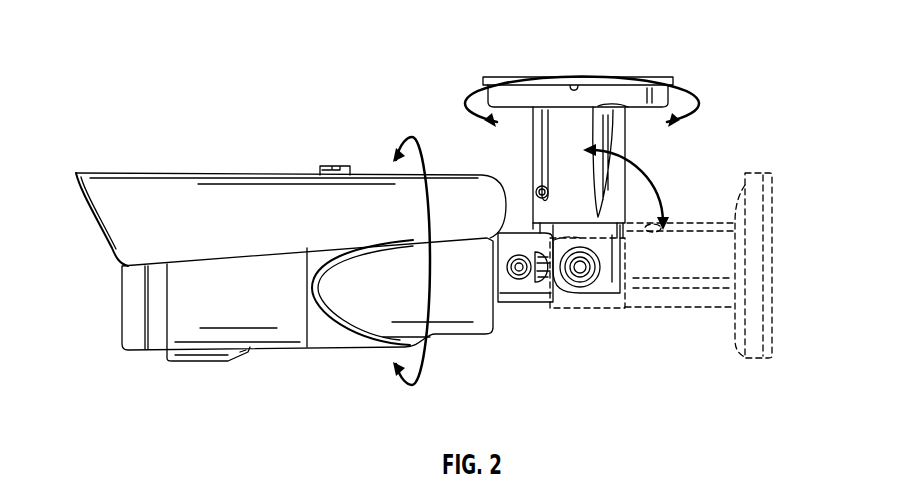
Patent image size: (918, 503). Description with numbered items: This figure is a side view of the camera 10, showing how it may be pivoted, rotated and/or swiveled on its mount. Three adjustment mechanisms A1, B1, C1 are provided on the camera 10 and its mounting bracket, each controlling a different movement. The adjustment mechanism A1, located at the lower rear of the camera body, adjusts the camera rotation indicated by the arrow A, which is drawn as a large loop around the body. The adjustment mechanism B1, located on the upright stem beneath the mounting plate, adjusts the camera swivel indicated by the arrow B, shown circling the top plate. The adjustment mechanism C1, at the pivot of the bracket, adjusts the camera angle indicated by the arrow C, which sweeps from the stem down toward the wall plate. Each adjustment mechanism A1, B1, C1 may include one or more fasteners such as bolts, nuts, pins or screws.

The camera 10 is at (255, 150).
The arrow indicating camera rotation A is at (433, 297).
The adjustment mechanism A1 is at (513, 282).
The arrow indicating camera swivel B is at (692, 88).
The adjustment mechanism B1 is at (528, 193).
The arrow indicating camera angle C is at (657, 175).
The adjustment mechanism C1 is at (593, 280).